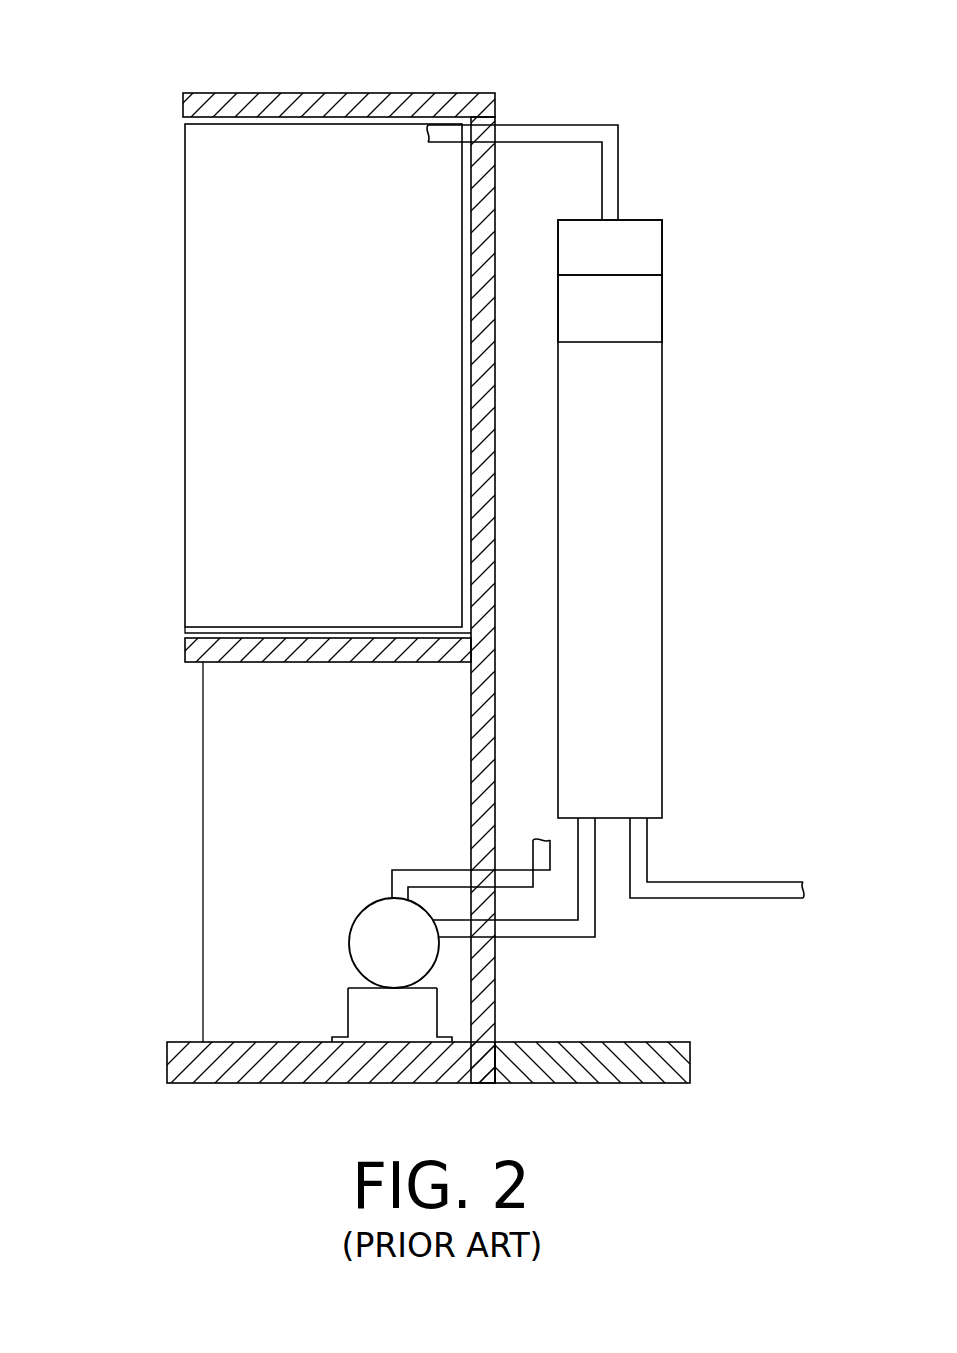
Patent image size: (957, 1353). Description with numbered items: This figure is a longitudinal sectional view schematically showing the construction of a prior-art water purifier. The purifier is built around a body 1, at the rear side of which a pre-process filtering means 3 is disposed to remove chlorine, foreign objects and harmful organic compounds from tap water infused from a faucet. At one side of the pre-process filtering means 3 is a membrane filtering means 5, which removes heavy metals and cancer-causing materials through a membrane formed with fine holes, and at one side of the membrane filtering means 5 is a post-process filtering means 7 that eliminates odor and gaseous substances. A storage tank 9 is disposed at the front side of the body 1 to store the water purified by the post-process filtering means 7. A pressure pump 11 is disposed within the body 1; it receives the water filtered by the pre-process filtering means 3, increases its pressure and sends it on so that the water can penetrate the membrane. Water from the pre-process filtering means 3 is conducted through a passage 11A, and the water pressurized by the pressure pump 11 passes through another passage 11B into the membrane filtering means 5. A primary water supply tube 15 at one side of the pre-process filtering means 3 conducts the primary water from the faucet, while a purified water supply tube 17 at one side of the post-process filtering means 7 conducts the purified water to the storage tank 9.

The body 1 is at (483, 686).
The pre-process filtering means 3 is at (628, 578).
The membrane filtering means 5 is at (649, 302).
The post-process filtering means 7 is at (651, 240).
The storage tank 9 is at (203, 347).
The pressure pump 11 is at (365, 953).
The passage 11A is at (585, 927).
The passage 11B is at (533, 855).
The primary water supply tube 15 is at (758, 888).
The purified water supply tube 17 is at (557, 128).